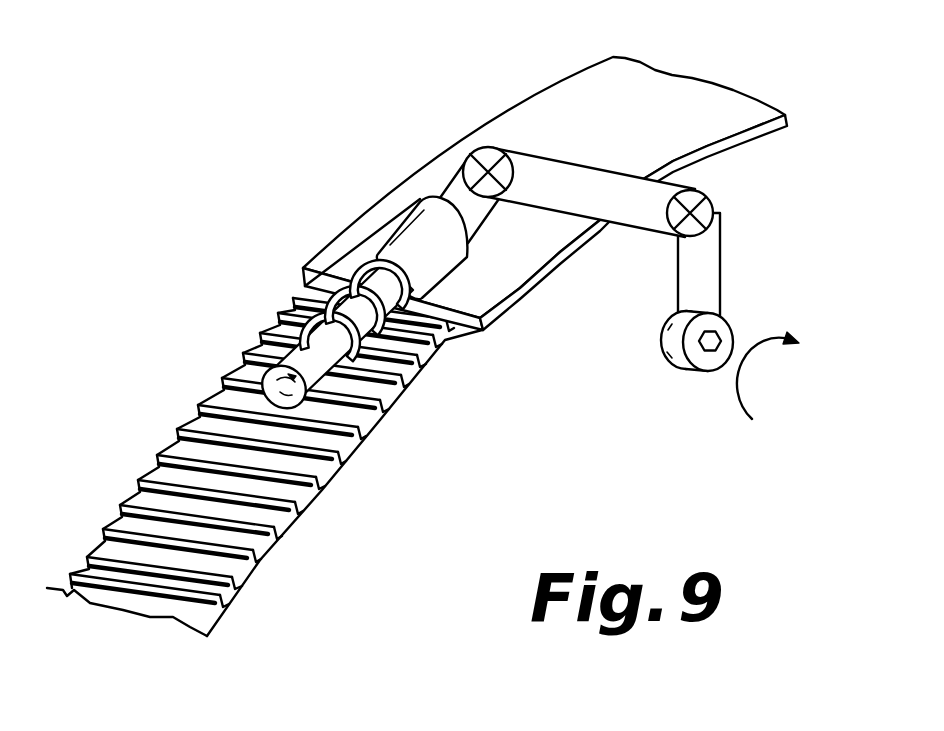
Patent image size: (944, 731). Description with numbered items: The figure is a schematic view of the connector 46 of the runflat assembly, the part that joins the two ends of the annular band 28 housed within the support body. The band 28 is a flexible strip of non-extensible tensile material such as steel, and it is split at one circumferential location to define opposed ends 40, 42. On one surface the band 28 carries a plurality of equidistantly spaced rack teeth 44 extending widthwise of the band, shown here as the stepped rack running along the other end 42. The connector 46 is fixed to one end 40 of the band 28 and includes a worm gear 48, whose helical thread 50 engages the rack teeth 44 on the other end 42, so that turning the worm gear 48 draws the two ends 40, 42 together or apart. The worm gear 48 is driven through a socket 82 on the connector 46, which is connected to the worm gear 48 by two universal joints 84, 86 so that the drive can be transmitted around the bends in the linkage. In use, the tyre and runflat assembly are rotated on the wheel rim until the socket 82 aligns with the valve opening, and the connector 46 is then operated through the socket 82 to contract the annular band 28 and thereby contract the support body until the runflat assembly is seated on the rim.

The annular band 28 is at (572, 161).
The end of the band 40 is at (342, 237).
The end of the band 42 is at (430, 357).
The rack teeth 44 is at (305, 455).
The connector 46 is at (353, 193).
The worm gear 48 is at (282, 329).
The helical thread 50 is at (262, 351).
The socket 82 is at (725, 328).
The universal joint 84 is at (708, 212).
The universal joint 86 is at (487, 152).